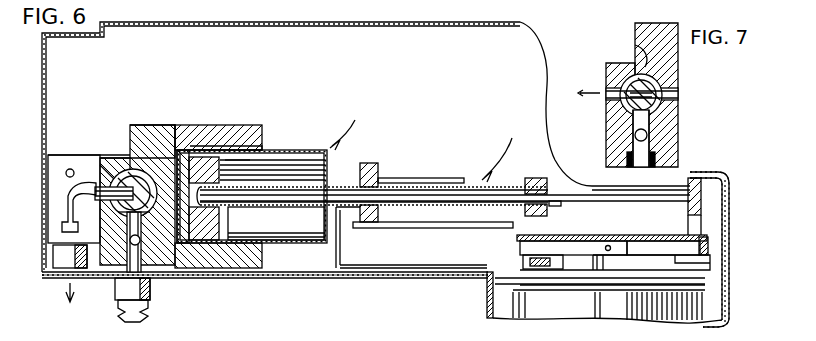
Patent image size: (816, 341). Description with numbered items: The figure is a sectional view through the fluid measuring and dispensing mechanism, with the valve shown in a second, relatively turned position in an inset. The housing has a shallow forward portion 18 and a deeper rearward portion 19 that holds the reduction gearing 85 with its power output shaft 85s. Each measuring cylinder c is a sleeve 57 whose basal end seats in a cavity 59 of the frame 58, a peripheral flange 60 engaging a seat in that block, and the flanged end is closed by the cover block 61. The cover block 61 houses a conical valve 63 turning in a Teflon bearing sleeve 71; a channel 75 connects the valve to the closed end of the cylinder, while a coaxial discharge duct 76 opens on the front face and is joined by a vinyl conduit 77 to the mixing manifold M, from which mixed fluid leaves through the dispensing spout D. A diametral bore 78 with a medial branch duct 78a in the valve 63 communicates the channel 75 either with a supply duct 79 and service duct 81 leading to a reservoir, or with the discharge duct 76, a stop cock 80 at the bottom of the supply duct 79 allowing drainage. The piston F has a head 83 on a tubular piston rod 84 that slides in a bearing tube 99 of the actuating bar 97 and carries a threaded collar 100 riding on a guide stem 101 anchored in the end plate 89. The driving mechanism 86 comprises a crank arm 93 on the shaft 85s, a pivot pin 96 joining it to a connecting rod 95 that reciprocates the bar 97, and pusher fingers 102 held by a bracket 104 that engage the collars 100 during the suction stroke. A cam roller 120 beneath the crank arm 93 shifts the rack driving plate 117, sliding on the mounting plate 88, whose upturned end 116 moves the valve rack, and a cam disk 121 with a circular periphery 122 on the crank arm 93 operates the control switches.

In FIG. 6, the forward portions of the housing 18 is at (300, 278).
In FIG. 6, the rearward portions of the housing 19 is at (485, 298).
In FIG. 6, the sleeve 57 is at (290, 150).
In FIG. 6, the frame 58 is at (206, 130).
In FIG. 6, the cavity 59 is at (230, 147).
In FIG. 6, the peripheral flange 60 is at (184, 148).
In FIG. 6, the cover block 61 is at (146, 128).
In FIG. 7, the cover block 61 is at (679, 56).
In FIG. 6, the valve 63 is at (110, 178).
In FIG. 6, the bearing sleeve 71 is at (126, 165).
In FIG. 6, the channel 75 is at (156, 125).
In FIG. 7, the channel 75 is at (676, 95).
In FIG. 6, the discharge duct 76 is at (100, 188).
In FIG. 7, the discharge duct 76 is at (614, 80).
In FIG. 6, the conduit 77 is at (66, 202).
In FIG. 6, the diametral bore 78 is at (128, 178).
In FIG. 7, the diametral bore 78 is at (662, 106).
In FIG. 6, the branch duct 78a is at (150, 232).
In FIG. 7, the branch duct 78a is at (637, 47).
In FIG. 6, the supply duct 79 is at (142, 262).
In FIG. 6, the stop cock 80 is at (135, 300).
In FIG. 6, the service duct 81 is at (128, 246).
In FIG. 7, the service duct 81 is at (636, 133).
In FIG. 6, the piston head 83 is at (204, 250).
In FIG. 6, the piston rod 84 is at (262, 203).
In FIG. 6, the reduction gearing 85 is at (566, 304).
In FIG. 6, the power output shaft 85s is at (608, 270).
In FIG. 6, the driving mechanism 86 is at (503, 151).
In FIG. 6, the mounting plate 88 is at (655, 272).
In FIG. 6, the end plate 89 is at (702, 178).
In FIG. 6, the crank arm 93 is at (568, 250).
In FIG. 6, the connecting rod 95 is at (420, 228).
In FIG. 6, the pivot pin 96 is at (556, 201).
In FIG. 6, the bar 97 is at (372, 188).
In FIG. 6, the bearing tube 99 is at (342, 186).
In FIG. 6, the collar 100 is at (534, 178).
In FIG. 6, the guide stem 101 is at (588, 192).
In FIG. 6, the pusher finger 102 is at (436, 178).
In FIG. 6, the bracket 104 is at (378, 170).
In FIG. 6, the upturned end 116 is at (342, 232).
In FIG. 6, the rack driving plate 117 is at (466, 266).
In FIG. 6, the cam roller 120 is at (540, 270).
In FIG. 6, the cam disk 121 is at (640, 236).
In FIG. 6, the circular periphery 122 is at (710, 246).
In FIG. 6, the mixing manifold M is at (52, 168).
In FIG. 6, the dispensing spout D is at (60, 262).
In FIG. 6, the piston F is at (236, 158).
In FIG. 6, the measuring cylinder c is at (345, 127).